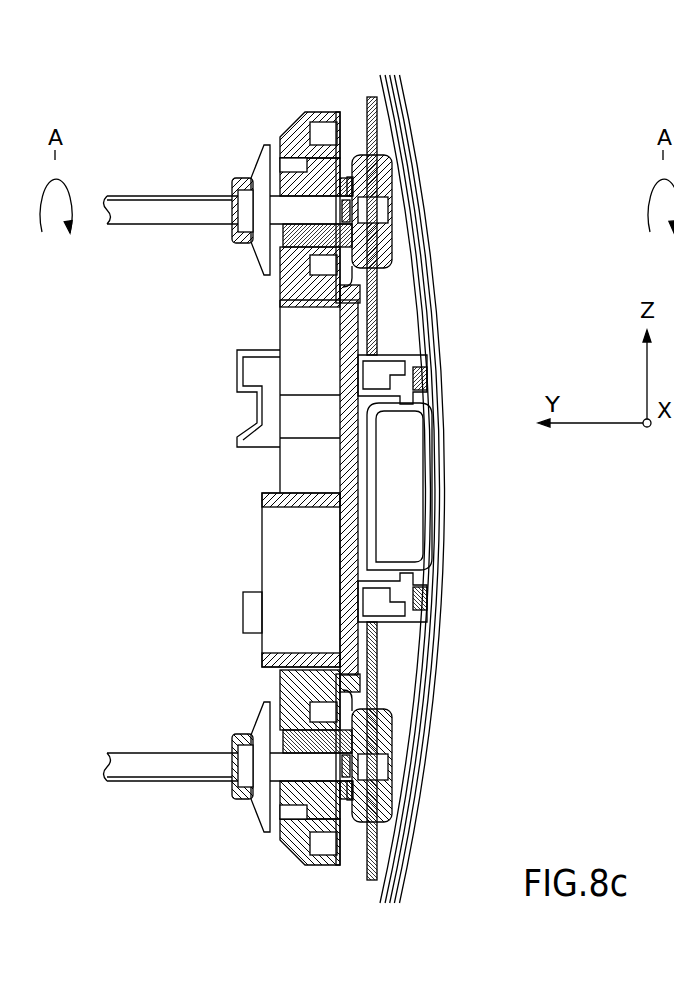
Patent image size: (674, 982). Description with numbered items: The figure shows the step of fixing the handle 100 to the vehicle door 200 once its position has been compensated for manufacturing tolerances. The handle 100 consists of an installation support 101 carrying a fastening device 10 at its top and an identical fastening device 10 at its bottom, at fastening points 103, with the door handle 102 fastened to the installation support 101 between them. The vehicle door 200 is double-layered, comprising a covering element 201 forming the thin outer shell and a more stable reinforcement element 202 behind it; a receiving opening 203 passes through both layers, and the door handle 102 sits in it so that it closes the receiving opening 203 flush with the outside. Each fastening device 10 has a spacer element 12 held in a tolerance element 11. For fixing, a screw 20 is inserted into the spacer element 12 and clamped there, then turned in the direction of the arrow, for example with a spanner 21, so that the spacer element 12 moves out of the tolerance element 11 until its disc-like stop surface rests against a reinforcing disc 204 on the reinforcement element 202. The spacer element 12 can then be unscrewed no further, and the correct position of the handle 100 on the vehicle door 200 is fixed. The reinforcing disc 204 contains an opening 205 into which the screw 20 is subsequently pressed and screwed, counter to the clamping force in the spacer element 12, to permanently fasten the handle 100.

The fastening device 10 is at (154, 148).
The tolerance element 11 is at (337, 158).
The spacer element 12 is at (280, 152).
The screw 20 is at (247, 223).
The spanner 21 is at (143, 210).
The handle 100 is at (200, 430).
The installation support 101 is at (345, 332).
The door handle 102 is at (432, 493).
The fastening point 103 is at (293, 125).
The vehicle door 200 is at (564, 183).
The covering element 201 is at (440, 313).
The reinforcement element 202 is at (378, 288).
The receiving opening 203 is at (447, 388).
The reinforcing disc 204 is at (383, 177).
The opening 205 is at (385, 213).